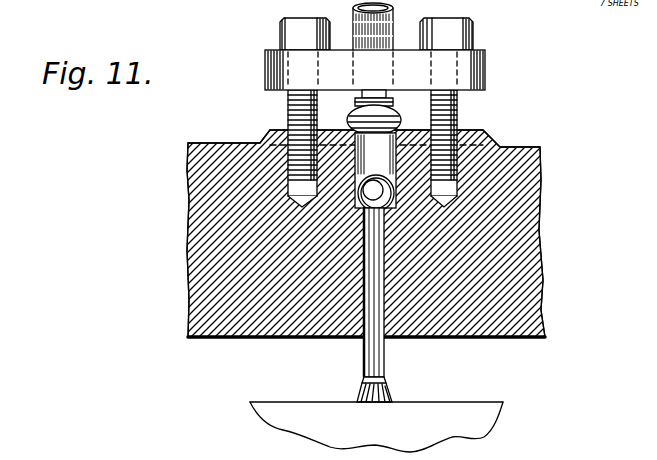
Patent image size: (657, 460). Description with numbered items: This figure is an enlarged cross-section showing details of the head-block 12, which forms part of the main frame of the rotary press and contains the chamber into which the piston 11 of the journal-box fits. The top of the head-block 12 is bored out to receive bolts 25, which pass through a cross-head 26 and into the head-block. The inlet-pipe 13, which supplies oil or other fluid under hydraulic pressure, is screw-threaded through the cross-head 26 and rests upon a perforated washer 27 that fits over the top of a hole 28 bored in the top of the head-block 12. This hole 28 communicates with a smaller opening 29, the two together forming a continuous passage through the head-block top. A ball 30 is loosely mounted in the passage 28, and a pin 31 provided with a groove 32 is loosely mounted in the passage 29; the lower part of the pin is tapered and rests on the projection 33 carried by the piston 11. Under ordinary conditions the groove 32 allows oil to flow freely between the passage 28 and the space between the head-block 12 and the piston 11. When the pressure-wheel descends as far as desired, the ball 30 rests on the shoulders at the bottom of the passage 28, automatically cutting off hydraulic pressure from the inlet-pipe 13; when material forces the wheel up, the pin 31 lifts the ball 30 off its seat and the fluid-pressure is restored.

The piston 11 is at (488, 411).
The head-block 12 is at (535, 263).
The inlet-pipe 13 is at (395, 33).
The bolts 25 is at (289, 104).
The cross-head 26 is at (266, 68).
The perforated washer 27 is at (396, 103).
The hole 28 is at (376, 170).
The smaller opening 29 is at (389, 210).
The ball 30 is at (372, 192).
The pin 31 is at (385, 362).
The groove 32 is at (364, 358).
The projection 33 is at (390, 393).